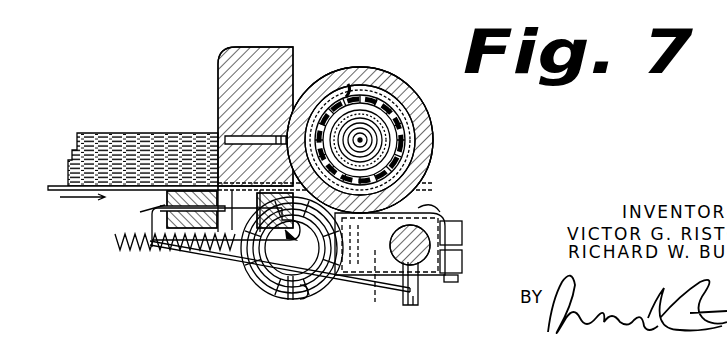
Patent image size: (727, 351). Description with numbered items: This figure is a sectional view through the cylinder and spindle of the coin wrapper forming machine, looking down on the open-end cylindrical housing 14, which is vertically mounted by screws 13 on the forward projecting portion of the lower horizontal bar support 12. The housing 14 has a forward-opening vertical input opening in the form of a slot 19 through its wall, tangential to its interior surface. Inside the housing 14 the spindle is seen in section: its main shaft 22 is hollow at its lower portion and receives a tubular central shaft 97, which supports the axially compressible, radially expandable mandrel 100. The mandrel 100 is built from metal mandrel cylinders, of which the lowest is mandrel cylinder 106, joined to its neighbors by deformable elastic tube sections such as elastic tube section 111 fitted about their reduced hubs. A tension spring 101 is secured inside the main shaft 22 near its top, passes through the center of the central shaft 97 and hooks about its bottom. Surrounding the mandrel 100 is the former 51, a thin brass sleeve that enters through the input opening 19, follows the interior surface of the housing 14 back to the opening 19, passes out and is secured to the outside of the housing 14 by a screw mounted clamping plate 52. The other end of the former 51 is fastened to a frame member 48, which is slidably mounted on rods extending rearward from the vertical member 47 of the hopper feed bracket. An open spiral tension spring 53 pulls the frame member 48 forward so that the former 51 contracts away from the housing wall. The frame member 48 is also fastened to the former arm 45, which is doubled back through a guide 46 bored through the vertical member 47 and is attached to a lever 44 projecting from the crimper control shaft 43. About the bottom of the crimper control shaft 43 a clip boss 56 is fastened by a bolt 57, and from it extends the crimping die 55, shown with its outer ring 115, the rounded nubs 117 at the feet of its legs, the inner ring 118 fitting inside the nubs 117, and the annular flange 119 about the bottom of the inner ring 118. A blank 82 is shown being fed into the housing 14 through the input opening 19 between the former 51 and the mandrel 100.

The horizontal bar support 12 is at (420, 211).
The screws 13 is at (373, 287).
The cylindrical housing 14 is at (423, 98).
The slot 19 is at (282, 181).
The main shaft 22 is at (356, 118).
The crimper control shaft 43 is at (430, 240).
The lever 44 is at (420, 300).
The former arm 45 is at (203, 258).
The guide 46 is at (168, 255).
The vertical member 47 is at (165, 203).
The frame member 48 is at (258, 208).
The former 51 is at (294, 93).
The clamping plate 52 is at (263, 47).
The open spiral tension spring 53 is at (128, 248).
The crimping die 55 is at (271, 309).
The clip boss 56 is at (466, 261).
The bolt 57 is at (463, 283).
The blank 82 is at (90, 133).
The central shaft 97 is at (368, 124).
The mandrel 100 is at (351, 84).
The tension spring 101 is at (385, 138).
The mandrel cylinder 106 is at (385, 126).
The deformable elastic tube section 111 is at (378, 120).
The outer ring 115 is at (290, 302).
The rounded nub 117 is at (306, 303).
The inner ring 118 is at (276, 286).
The annular flange 119 is at (282, 276).